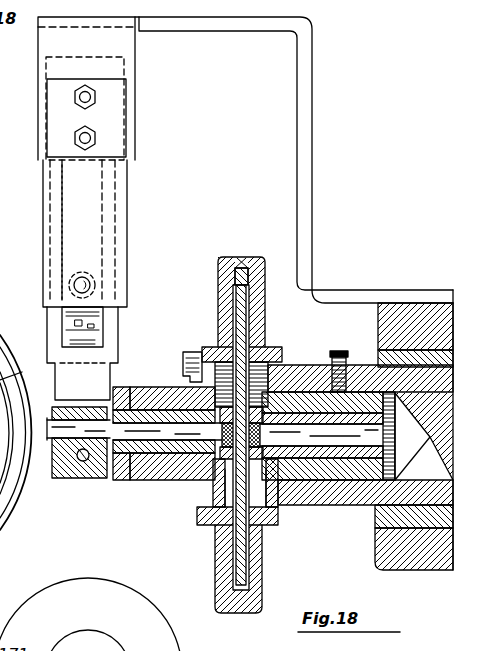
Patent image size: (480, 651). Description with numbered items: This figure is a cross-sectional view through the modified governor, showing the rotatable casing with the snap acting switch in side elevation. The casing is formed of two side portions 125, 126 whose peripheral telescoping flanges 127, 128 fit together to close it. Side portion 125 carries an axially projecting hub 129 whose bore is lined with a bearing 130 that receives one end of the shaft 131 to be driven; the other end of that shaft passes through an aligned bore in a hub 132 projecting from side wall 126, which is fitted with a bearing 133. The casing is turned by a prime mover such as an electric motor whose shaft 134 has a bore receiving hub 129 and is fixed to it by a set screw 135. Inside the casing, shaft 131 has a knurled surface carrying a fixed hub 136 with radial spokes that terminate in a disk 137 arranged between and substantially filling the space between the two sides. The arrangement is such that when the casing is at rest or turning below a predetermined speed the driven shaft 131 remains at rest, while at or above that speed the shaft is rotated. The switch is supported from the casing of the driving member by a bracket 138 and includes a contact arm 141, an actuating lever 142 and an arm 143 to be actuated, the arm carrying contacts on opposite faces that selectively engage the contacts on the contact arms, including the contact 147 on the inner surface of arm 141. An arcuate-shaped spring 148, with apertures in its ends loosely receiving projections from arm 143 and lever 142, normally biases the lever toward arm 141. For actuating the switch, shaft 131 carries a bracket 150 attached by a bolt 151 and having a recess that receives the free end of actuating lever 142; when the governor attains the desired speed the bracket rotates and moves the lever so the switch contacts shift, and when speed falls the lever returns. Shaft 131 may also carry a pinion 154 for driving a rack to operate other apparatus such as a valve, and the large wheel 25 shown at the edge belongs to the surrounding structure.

The wheel 25 is at (15, 456).
The side portion 125 is at (264, 320).
The side portion 126 is at (222, 318).
The telescoping flange 127 is at (245, 257).
The telescoping flange 128 is at (230, 257).
The hub 129 is at (397, 470).
The bearing 130 is at (302, 500).
The shaft 131 is at (123, 483).
The hub 132 is at (140, 385).
The bearing 133 is at (155, 483).
The shaft 134 is at (348, 513).
The set screw 135 is at (327, 360).
The fixed hub 136 is at (200, 505).
The disk 137 is at (238, 293).
The bracket 138 is at (316, 147).
The contact arm 141 is at (110, 205).
The actuating lever 142 is at (112, 330).
The arm 143 is at (102, 257).
The contact 147 is at (72, 285).
The arcuate-shaped spring 148 is at (75, 333).
The bracket 150 is at (87, 482).
The bolt 151 is at (70, 483).
The pinion 154 is at (91, 614).